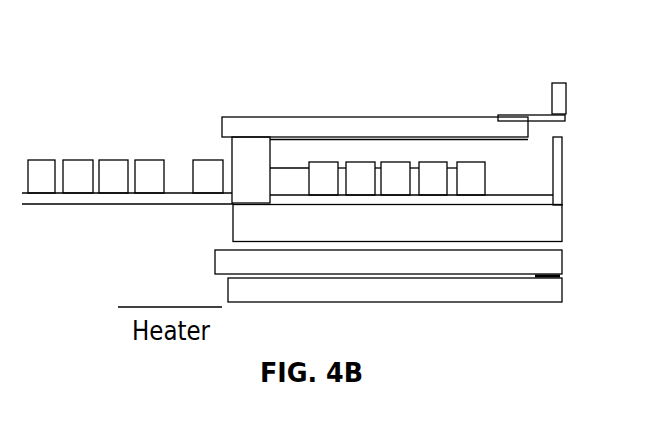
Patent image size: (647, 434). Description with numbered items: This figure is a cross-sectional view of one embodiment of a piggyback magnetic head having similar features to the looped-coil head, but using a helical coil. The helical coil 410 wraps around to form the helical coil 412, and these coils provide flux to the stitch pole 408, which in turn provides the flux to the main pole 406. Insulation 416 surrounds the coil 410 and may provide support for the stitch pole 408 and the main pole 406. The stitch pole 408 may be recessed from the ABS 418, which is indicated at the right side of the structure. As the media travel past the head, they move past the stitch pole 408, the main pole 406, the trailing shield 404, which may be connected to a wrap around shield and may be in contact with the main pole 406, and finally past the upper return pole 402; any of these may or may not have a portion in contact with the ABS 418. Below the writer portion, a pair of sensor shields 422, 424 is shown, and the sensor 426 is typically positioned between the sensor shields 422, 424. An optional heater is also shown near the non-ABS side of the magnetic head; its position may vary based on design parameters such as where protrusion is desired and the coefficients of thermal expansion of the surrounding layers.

The upper return pole 402 is at (568, 95).
The trailing shield 404 is at (563, 175).
The main pole 406 is at (535, 113).
The stitch pole 408 is at (402, 117).
The helical coil 410 is at (471, 162).
The helical coil 412 is at (33, 158).
The insulation 416 is at (445, 233).
The ABS 418 is at (568, 222).
The sensor shield 422 is at (215, 262).
The sensor shield 424 is at (227, 286).
The sensor 426 is at (556, 275).